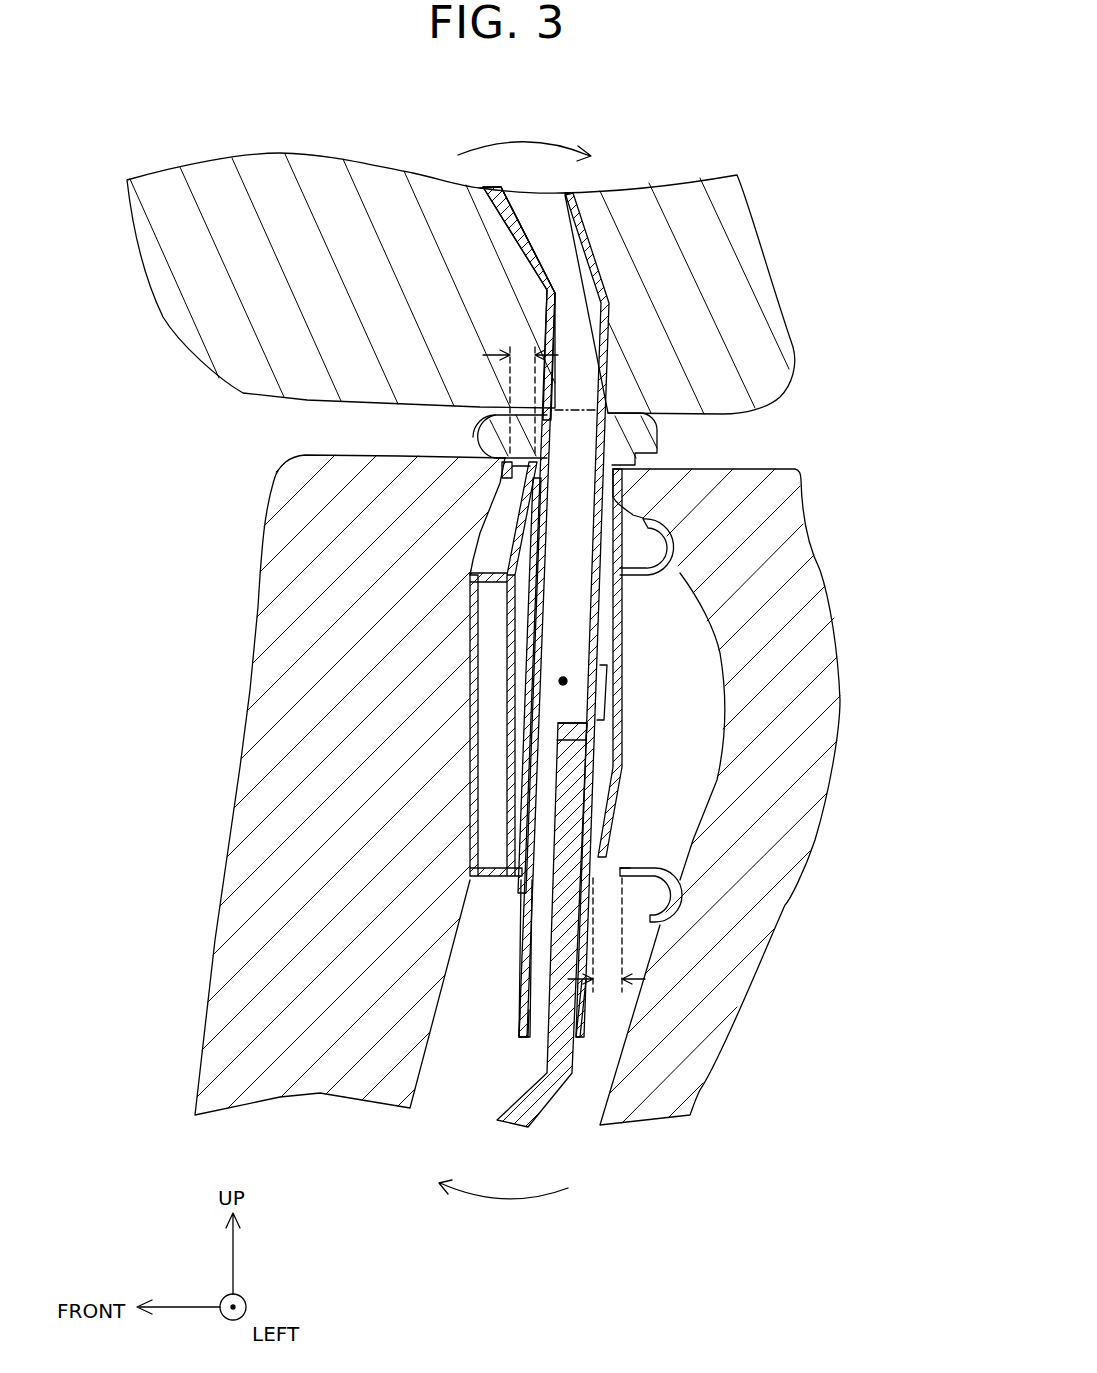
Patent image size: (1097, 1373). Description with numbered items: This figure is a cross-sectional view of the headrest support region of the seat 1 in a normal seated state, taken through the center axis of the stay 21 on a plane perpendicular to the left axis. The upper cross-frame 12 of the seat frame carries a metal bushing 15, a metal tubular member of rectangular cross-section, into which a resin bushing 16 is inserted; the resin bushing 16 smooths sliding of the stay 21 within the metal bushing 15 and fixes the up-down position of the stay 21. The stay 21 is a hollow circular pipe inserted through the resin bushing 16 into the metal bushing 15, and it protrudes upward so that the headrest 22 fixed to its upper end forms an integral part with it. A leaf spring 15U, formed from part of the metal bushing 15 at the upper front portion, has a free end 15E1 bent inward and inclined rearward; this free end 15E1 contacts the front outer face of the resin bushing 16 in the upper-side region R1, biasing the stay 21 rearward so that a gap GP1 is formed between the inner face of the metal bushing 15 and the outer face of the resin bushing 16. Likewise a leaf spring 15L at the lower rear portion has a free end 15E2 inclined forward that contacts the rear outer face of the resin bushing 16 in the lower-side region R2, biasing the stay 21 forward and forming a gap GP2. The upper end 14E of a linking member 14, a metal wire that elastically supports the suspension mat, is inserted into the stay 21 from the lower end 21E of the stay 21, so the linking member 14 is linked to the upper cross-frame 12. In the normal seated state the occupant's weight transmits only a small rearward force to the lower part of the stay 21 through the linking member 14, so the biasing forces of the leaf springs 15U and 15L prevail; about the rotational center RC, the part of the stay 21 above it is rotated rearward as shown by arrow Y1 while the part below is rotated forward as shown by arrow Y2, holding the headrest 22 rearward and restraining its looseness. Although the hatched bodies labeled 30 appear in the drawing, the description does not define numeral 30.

The seat 1 is at (813, 87).
The headrest 22 is at (745, 298).
The resin bushing 16 is at (647, 443).
The garnish body 30 is at (820, 615).
The upper cross-frame 12 is at (695, 588).
The metal bushing 15 is at (563, 681).
The leaf spring 15U is at (535, 510).
The leaf spring 15L is at (605, 770).
The free end 15E1 is at (505, 468).
The free end 15E2 is at (593, 900).
The linking member 14 is at (556, 908).
The upper end 14E is at (563, 722).
The stay 21 is at (523, 945).
The lower end 21E is at (518, 1040).
The rotational center RC is at (603, 675).
The gap GP1 is at (520, 347).
The gap GP2 is at (607, 985).
The region R1 is at (478, 436).
The region R2 is at (630, 859).
The arrow Y1 is at (524, 132).
The arrow Y2 is at (503, 1212).